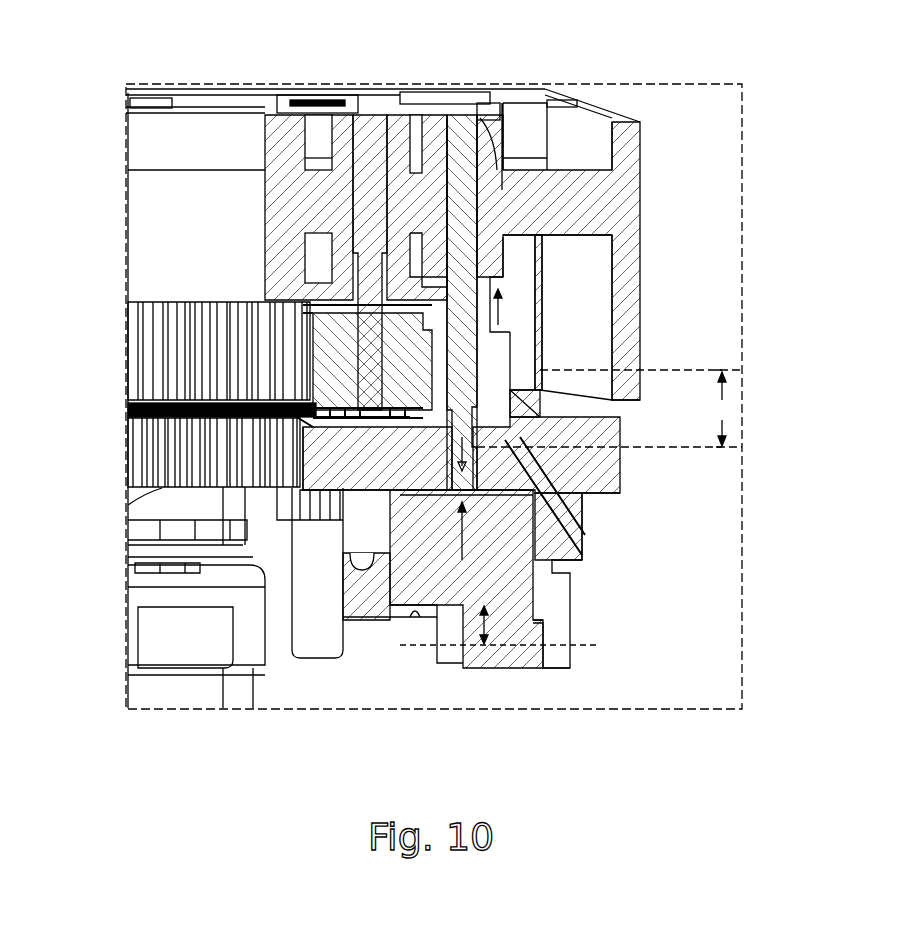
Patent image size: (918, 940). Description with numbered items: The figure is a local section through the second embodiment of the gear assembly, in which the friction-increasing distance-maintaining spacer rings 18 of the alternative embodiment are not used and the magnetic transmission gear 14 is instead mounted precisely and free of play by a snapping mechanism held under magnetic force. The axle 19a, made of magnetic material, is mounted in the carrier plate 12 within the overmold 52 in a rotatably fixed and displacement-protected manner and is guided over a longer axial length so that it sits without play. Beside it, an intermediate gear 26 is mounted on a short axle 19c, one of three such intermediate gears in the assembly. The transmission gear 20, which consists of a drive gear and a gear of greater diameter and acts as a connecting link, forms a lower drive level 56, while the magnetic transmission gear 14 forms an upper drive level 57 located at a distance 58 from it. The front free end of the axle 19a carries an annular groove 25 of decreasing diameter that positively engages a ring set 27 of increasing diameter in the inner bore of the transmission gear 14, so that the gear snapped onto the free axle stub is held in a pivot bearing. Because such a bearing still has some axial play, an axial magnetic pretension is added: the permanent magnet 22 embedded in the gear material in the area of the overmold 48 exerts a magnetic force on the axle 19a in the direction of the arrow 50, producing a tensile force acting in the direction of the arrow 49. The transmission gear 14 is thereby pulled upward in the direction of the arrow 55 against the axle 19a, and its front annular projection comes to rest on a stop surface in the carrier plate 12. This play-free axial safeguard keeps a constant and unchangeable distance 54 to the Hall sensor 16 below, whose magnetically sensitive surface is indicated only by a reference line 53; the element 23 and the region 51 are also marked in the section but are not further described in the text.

The carrier plate 12 is at (625, 150).
The magnetic transmission gear 14 is at (222, 453).
The Hall sensor 16 is at (495, 596).
The distance-maintaining spacer ring 18 is at (185, 655).
The axle 19a is at (480, 198).
The short axle 19c is at (370, 114).
The transmission gear 20 is at (205, 333).
The permanent magnet 22 is at (397, 615).
The tab 23 is at (433, 617).
The annular groove 25 is at (510, 488).
The ring set 27 is at (480, 433).
The intermediate gear 26 is at (405, 335).
The overmold 48 is at (490, 550).
The arrow 49 is at (465, 532).
The arrow 50 is at (560, 617).
The cavity 51 is at (500, 265).
The overmold 52 is at (490, 106).
The reference line 53 is at (600, 647).
The distance 54 is at (497, 630).
The arrow 55 is at (500, 305).
The lower drive level 56 is at (718, 370).
The upper drive level 57 is at (730, 447).
The distance 58 is at (724, 410).